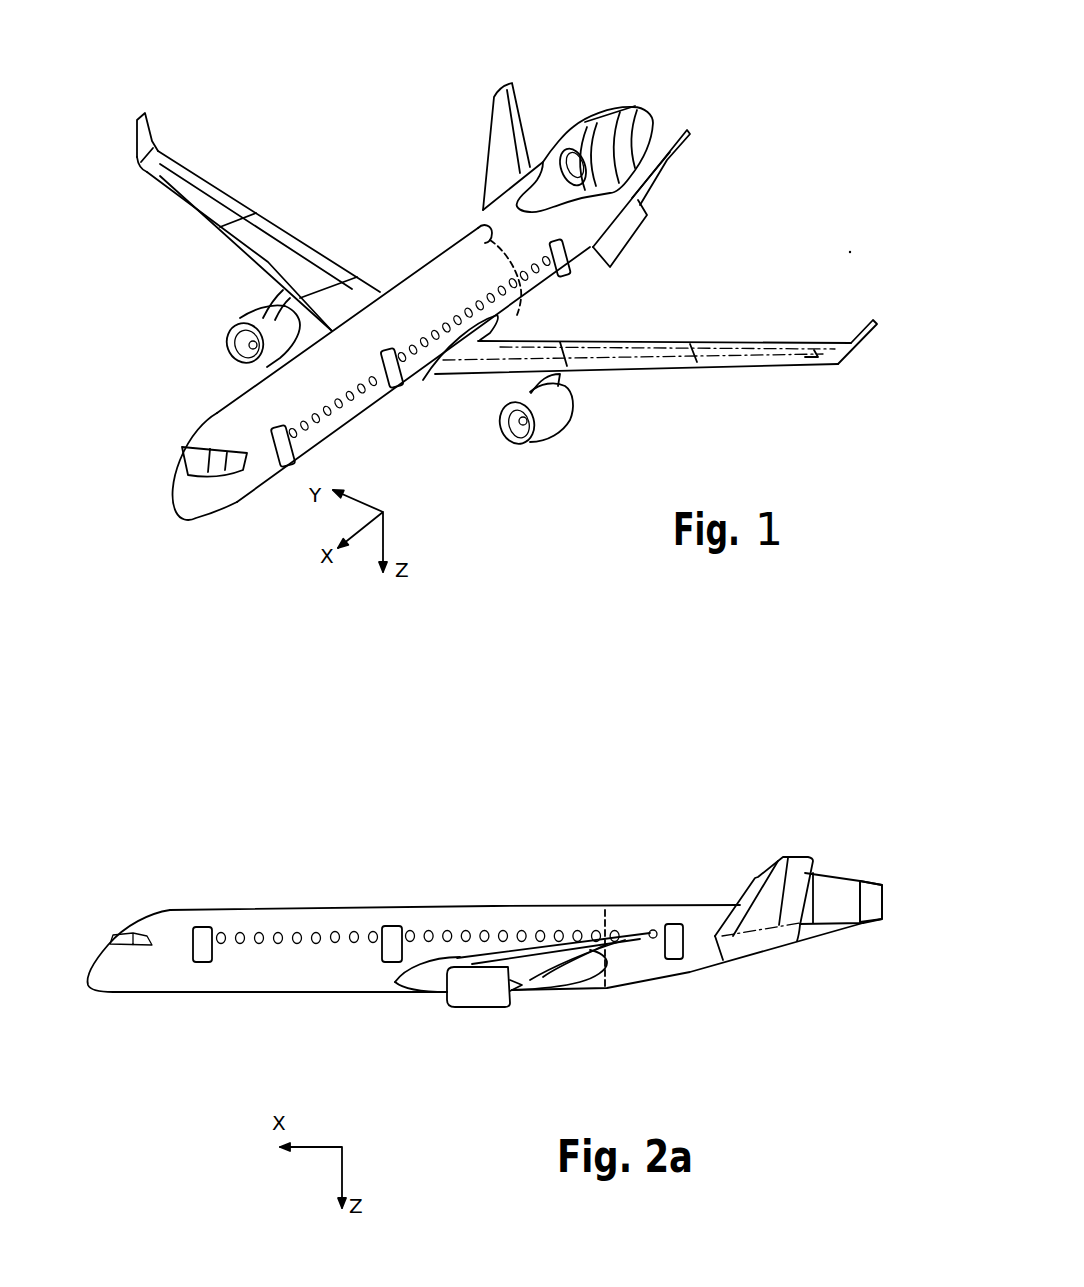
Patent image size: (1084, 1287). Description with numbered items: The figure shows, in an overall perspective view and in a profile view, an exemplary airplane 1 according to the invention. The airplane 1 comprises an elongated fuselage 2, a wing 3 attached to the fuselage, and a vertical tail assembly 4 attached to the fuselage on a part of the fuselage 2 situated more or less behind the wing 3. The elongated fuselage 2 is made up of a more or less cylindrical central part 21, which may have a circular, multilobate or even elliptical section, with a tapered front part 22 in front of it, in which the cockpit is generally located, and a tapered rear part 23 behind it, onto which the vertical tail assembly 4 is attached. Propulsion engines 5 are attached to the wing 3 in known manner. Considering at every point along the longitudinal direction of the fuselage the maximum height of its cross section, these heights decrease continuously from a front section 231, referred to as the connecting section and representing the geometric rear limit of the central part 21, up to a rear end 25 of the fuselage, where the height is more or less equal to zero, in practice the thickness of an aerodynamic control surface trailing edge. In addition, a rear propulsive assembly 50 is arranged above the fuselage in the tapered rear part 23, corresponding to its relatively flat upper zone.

In FIG. 1, the airplane 1 is at (316, 146).
In FIG. 2A, the airplane 1 is at (392, 868).
In FIG. 1, the elongated fuselage 2 is at (400, 267).
In FIG. 2A, the elongated fuselage 2 is at (306, 906).
In FIG. 1, the wing 3 is at (665, 378).
In FIG. 2A, the wing 3 is at (552, 995).
In FIG. 1, the vertical tail assembly 4 is at (525, 98).
In FIG. 2A, the vertical tail assembly 4 is at (787, 852).
In FIG. 1, the propulsion engines 5 is at (252, 312).
In FIG. 2A, the propulsion engines 5 is at (477, 991).
In FIG. 1, the central part 21 is at (338, 417).
In FIG. 2A, the central part 21 is at (320, 980).
In FIG. 1, the tapered front part 22 is at (218, 493).
In FIG. 2A, the tapered front part 22 is at (155, 978).
In FIG. 1, the tapered rear part 23 is at (580, 253).
In FIG. 2A, the tapered rear part 23 is at (648, 972).
In FIG. 1, the rear end 25 is at (681, 160).
In FIG. 2A, the rear end 25 is at (858, 925).
In FIG. 1, the rear propulsive assembly 50 is at (602, 100).
In FIG. 2A, the rear propulsive assembly 50 is at (840, 864).
In FIG. 1, the front section 231 is at (478, 222).
In FIG. 2A, the front section 231 is at (600, 924).